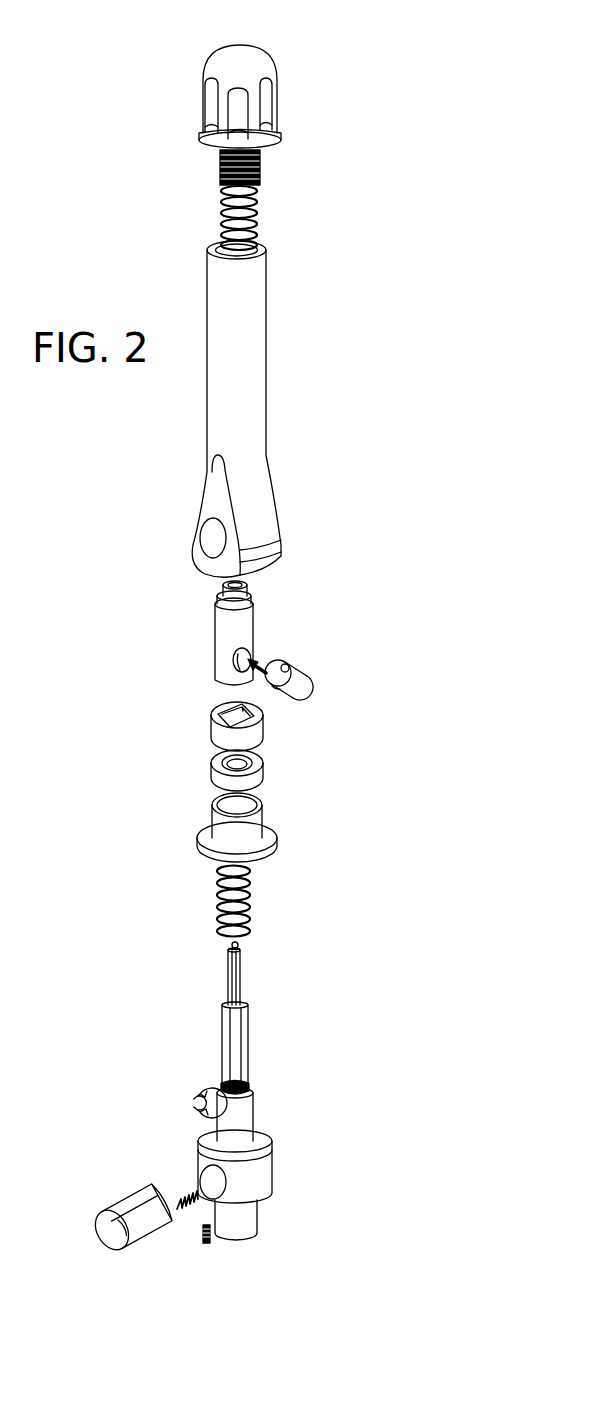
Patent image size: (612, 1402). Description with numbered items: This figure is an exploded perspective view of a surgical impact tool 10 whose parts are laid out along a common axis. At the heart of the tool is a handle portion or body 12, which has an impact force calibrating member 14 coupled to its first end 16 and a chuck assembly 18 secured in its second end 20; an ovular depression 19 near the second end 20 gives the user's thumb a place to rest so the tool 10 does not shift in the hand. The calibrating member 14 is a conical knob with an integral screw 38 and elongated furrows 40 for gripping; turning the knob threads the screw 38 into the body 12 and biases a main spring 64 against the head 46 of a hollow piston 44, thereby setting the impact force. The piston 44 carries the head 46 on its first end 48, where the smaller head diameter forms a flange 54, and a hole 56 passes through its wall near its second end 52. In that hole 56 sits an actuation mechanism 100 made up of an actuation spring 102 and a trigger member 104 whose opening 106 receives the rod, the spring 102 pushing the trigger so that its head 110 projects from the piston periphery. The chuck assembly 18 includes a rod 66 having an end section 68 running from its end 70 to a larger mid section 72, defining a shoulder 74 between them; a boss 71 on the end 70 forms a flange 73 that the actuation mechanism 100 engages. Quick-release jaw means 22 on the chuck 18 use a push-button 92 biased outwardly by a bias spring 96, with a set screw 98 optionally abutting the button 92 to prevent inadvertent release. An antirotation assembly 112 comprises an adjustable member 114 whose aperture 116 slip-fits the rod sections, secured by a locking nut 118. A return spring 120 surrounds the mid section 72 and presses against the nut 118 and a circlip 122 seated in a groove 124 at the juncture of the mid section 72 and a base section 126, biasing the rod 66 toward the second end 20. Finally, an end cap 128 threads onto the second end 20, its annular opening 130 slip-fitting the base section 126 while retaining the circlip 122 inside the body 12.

The impact tool 10 is at (100, 684).
The body 12 is at (240, 404).
The impact force calibrating member 14 is at (270, 62).
The first end 16 is at (267, 250).
The chuck assembly 18 is at (292, 1143).
The ovular depression 19 is at (211, 508).
The second end 20 is at (281, 558).
The quick-release jaw means 22 is at (259, 1216).
The screw 38 is at (263, 166).
The elongated furrows 40 is at (215, 100).
The hollow piston 44 is at (215, 643).
The head 46 is at (224, 592).
The first end 48 is at (253, 612).
The second end 52 is at (215, 669).
The flange 54 is at (219, 601).
The hole 56 is at (254, 656).
The main spring 64 is at (221, 217).
The rod 66 is at (290, 1033).
The end section 68 is at (228, 981).
The end 70 is at (242, 950).
The boss 71 is at (240, 943).
The mid section 72 is at (225, 1046).
The flange 73 is at (229, 948).
The shoulder 74 is at (248, 1001).
The push-button 92 is at (138, 1206).
The bias spring 96 is at (180, 1196).
The set screw 98 is at (212, 1239).
The actuation mechanism 100 is at (330, 639).
The actuation spring 102 is at (265, 673).
The trigger member 104 is at (275, 690).
The opening 106 is at (290, 669).
The head 110 is at (311, 690).
The antirotation assembly 112 is at (289, 753).
The adjustable member 114 is at (222, 731).
The aperture 116 is at (222, 713).
The locking nut 118 is at (263, 771).
The return spring 120 is at (251, 876).
The circlip 122 is at (185, 1094).
The groove 124 is at (251, 1090).
The base section 126 is at (253, 1120).
The end cap 128 is at (274, 842).
The annular opening 130 is at (234, 810).